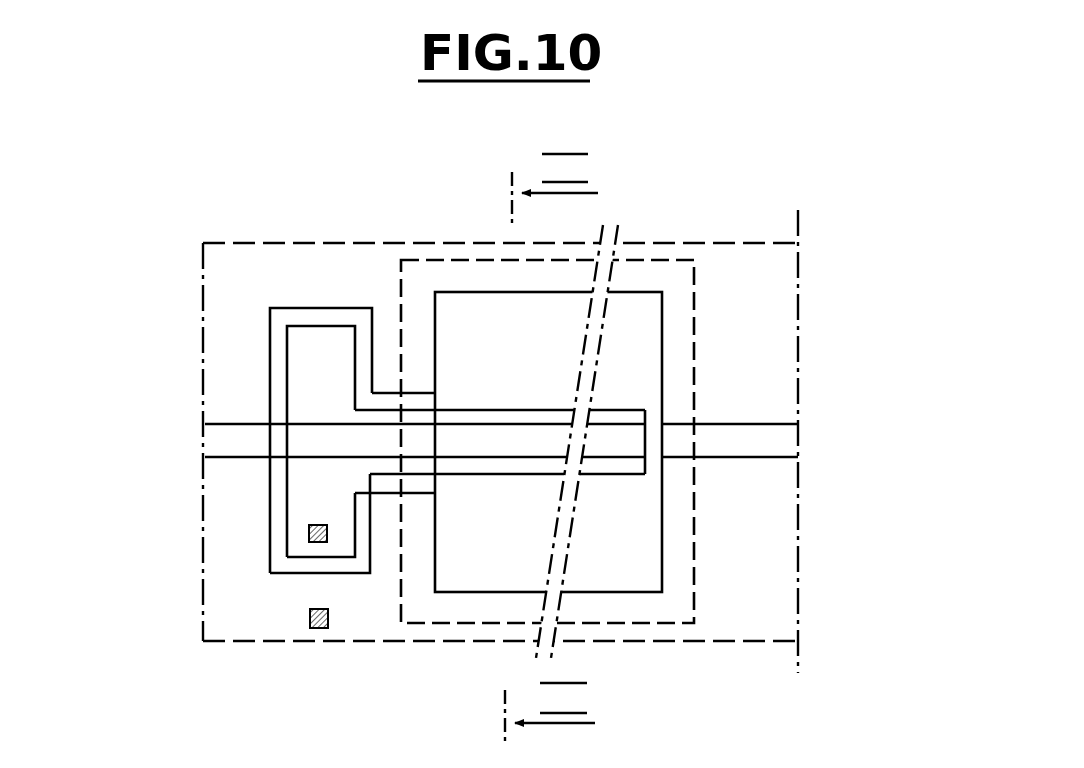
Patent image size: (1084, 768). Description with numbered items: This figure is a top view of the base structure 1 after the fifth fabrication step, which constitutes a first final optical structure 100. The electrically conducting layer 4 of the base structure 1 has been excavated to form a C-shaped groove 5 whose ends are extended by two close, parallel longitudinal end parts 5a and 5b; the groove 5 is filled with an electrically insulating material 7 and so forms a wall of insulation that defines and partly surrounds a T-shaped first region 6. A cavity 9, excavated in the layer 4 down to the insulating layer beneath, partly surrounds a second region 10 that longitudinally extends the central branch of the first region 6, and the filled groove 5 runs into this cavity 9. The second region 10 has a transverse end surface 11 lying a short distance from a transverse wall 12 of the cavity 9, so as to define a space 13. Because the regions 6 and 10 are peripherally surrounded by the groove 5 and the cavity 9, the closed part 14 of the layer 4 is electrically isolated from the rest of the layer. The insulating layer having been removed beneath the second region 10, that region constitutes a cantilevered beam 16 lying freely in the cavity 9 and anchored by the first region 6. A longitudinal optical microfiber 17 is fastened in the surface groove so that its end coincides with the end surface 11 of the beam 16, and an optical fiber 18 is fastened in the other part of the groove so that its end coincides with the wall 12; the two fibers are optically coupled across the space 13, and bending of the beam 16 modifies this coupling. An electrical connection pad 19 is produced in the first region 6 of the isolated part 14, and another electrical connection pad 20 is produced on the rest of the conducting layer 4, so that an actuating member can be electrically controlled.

The multilayer base structure 1 is at (714, 240).
The second layer 4 is at (718, 558).
The groove 5 is at (272, 487).
The longitudinal end part 5a is at (383, 392).
The longitudinal end part 5b is at (384, 495).
The first region 6 is at (312, 509).
The electrically insulating material 7 is at (278, 386).
The cavity 9 is at (625, 350).
The second region 10 is at (605, 465).
The transverse end surface 11 is at (655, 412).
The transverse wall 12 is at (642, 512).
The space 13 is at (655, 458).
The closed part 14 is at (470, 485).
The cantilevered beam 16 is at (500, 462).
The optical microfiber 17 is at (242, 440).
The optical fiber 18 is at (748, 440).
The electrical connection pad 19 is at (307, 538).
The electrical connection pad 20 is at (308, 628).
The optical structure 100 is at (749, 656).